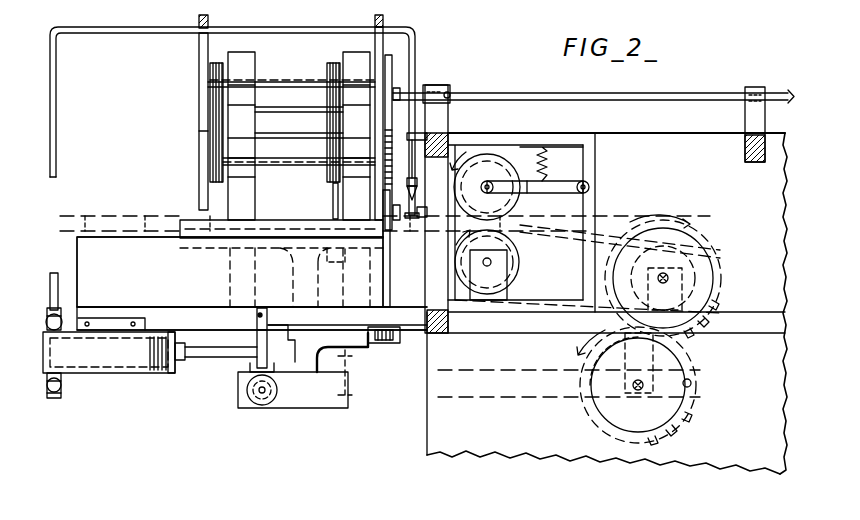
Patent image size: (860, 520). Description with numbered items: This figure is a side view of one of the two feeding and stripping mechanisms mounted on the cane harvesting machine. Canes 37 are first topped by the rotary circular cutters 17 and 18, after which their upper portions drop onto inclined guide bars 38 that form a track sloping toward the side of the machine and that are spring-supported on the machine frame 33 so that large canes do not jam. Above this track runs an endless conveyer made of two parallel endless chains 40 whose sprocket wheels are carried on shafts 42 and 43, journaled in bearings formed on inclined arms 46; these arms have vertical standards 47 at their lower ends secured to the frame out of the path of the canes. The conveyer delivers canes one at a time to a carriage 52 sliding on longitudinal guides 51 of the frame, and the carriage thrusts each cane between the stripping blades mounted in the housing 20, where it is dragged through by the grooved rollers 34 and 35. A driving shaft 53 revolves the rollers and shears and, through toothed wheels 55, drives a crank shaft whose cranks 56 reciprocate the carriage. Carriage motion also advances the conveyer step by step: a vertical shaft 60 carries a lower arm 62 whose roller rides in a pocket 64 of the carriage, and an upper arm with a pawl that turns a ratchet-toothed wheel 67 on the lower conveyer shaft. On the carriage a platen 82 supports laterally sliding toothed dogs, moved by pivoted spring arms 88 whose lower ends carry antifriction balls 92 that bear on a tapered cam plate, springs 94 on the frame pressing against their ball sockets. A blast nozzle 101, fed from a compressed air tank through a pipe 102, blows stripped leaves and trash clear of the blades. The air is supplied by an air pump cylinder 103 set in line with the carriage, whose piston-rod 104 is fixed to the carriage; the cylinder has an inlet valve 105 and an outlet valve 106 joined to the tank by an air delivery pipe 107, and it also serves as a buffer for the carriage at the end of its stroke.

The rotary circular cutter 17 is at (393, 60).
The rotary circular cutter 18 is at (391, 268).
The housing 20 is at (447, 133).
The machine frame 33 is at (445, 430).
The grooved roller 34 is at (508, 268).
The grooved roller 35 is at (508, 196).
The cane 37 is at (73, 220).
The inclined guide bar 38 is at (203, 40).
The endless chain 40 is at (218, 120).
The shaft 42 is at (289, 65).
The shaft 43 is at (292, 163).
The arm 46 is at (233, 98).
The vertical standard 47 is at (242, 272).
The longitudinal guide 51 is at (128, 290).
The carriage 52 is at (637, 385).
The driving shaft 53 is at (667, 277).
The toothed wheel 55 is at (700, 299).
The crank 56 is at (688, 415).
The vertical shaft 60 is at (335, 198).
The arm 62 is at (345, 360).
The pocket 64 is at (395, 352).
The ratchet-toothed wheel 67 is at (445, 92).
The platen 82 is at (197, 233).
The spring arm 88 is at (260, 318).
The antifriction ball 92 is at (254, 405).
The spring 94 is at (256, 337).
The blast nozzle 101 is at (413, 197).
The pipe 102 is at (108, 32).
The air pump cylinder 103 is at (125, 355).
The piston-rod 104 is at (213, 322).
The inlet valve 105 is at (60, 398).
The outlet valve 106 is at (62, 315).
The air delivery pipe 107 is at (60, 280).